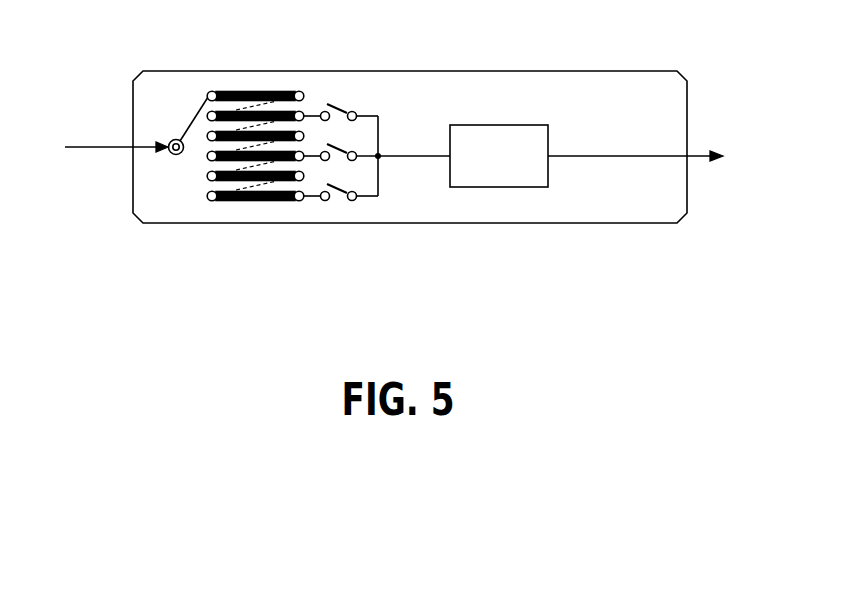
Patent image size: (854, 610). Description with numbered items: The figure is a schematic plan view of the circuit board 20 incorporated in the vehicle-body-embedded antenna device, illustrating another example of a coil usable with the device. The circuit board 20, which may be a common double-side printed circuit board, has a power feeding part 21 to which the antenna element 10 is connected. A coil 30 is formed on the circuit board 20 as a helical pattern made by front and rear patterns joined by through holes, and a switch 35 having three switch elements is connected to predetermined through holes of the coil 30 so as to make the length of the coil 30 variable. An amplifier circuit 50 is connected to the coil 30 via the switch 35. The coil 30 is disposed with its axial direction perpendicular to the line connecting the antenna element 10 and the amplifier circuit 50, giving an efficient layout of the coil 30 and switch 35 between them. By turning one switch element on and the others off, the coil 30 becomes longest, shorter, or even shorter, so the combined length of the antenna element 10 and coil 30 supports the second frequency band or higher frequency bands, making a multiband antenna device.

The antenna element 10 is at (104, 149).
The circuit board 20 is at (585, 224).
The power feeding part 21 is at (178, 155).
The coil 30 is at (205, 63).
The switch 35 is at (367, 230).
The amplifier circuit 50 is at (505, 188).